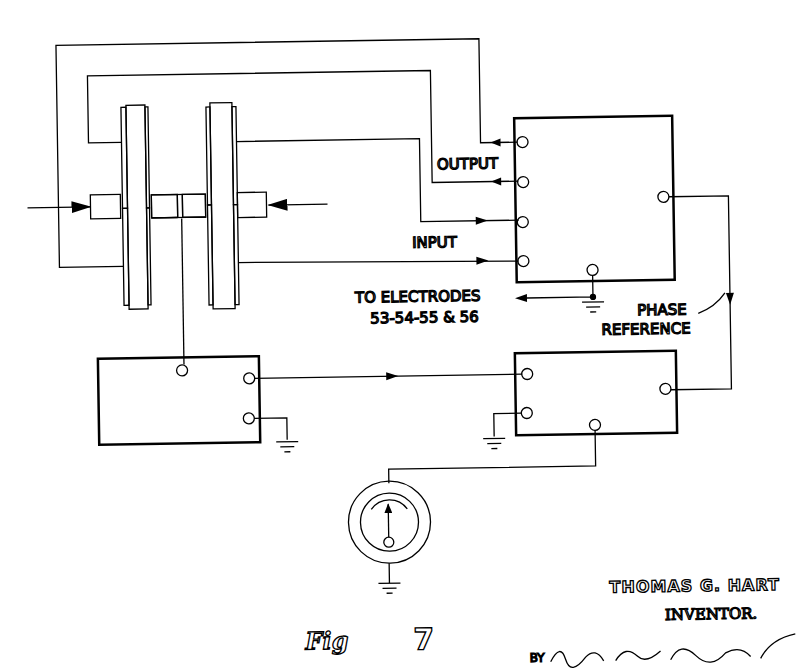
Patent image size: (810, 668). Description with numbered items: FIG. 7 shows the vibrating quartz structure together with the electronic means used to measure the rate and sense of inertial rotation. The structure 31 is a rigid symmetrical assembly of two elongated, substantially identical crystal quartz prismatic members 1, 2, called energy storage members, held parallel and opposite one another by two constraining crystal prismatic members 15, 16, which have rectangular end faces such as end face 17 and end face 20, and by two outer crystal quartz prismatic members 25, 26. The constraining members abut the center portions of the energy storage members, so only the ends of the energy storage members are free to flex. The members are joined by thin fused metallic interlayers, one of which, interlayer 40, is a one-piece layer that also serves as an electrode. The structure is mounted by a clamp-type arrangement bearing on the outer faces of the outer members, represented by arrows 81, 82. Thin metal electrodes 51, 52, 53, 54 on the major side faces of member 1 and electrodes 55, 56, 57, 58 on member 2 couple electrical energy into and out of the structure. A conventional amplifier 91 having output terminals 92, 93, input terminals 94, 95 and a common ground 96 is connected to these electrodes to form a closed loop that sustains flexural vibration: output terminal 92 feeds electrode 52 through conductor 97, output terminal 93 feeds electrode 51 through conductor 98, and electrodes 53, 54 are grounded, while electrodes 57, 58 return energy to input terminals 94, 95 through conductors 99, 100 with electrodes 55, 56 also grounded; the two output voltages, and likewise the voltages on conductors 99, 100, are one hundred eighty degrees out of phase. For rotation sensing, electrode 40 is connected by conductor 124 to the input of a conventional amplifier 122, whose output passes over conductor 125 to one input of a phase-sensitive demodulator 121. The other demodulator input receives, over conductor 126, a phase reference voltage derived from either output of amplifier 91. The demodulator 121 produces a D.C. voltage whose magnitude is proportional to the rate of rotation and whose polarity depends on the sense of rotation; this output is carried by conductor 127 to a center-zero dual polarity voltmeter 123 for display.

The crystal quartz prismatic member 1 is at (138, 306).
The crystal quartz prismatic member 2 is at (222, 308).
The crystal prismatic member 15 is at (171, 216).
The crystal prismatic member 16 is at (195, 217).
The rectangular end face 17 is at (160, 188).
The rectangular end face 20 is at (197, 191).
The outer crystal quartz prismatic member 25 is at (116, 214).
The outer crystal quartz prismatic member 26 is at (247, 217).
The rigid symmetrical structure 31 is at (187, 182).
The metallic interlayer 40 is at (182, 215).
The electrode 51 is at (123, 138).
The electrode 52 is at (121, 281).
The electrode 53 is at (151, 130).
The electrode 54 is at (151, 291).
The electrode 55 is at (209, 125).
The electrode 56 is at (206, 292).
The electrode 57 is at (252, 155).
The electrode 58 is at (239, 279).
The arrow 81 is at (54, 202).
The arrow 82 is at (320, 202).
The amplifier 91 is at (614, 169).
The output terminal 92 is at (520, 141).
The output terminal 93 is at (520, 189).
The input terminal 94 is at (519, 227).
The input terminal 95 is at (519, 268).
The common ground 96 is at (598, 295).
The conductor 97 is at (454, 40).
The conductor 98 is at (424, 70).
The conductor 99 is at (422, 150).
The conductor 100 is at (291, 263).
The phase-sensitive demodulator 121 is at (593, 380).
The amplifier 122 is at (181, 427).
The center-zero dual polarity voltmeter 123 is at (427, 517).
The conductor 124 is at (181, 337).
The conductor 125 is at (299, 376).
The conductor 126 is at (732, 268).
The conductor 127 is at (497, 469).